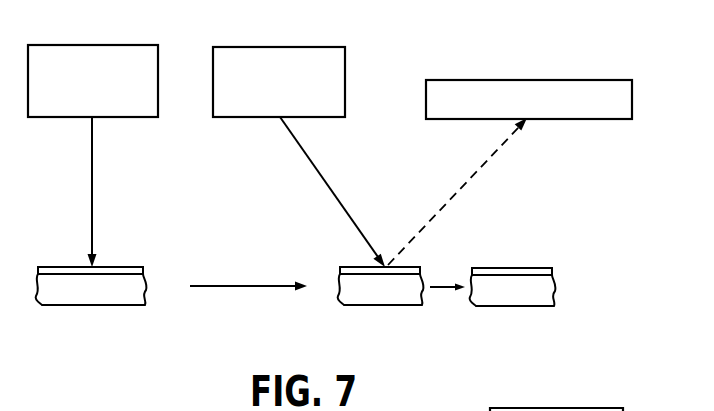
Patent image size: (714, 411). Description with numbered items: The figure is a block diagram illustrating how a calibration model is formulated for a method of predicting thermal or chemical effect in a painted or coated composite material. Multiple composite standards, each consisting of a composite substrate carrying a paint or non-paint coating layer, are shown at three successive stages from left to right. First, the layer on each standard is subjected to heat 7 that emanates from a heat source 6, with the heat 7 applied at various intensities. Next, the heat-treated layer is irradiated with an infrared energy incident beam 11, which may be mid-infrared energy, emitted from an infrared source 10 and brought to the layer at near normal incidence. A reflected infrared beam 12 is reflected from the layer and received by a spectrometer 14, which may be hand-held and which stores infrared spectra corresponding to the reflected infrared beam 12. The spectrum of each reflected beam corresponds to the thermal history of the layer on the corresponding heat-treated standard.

The heat source 6 is at (92, 45).
The heat 7 is at (93, 163).
The infrared source 10 is at (278, 47).
The infrared energy incident beam 11 is at (318, 177).
The reflected infrared beam 12 is at (478, 172).
The spectrometer 14 is at (527, 80).